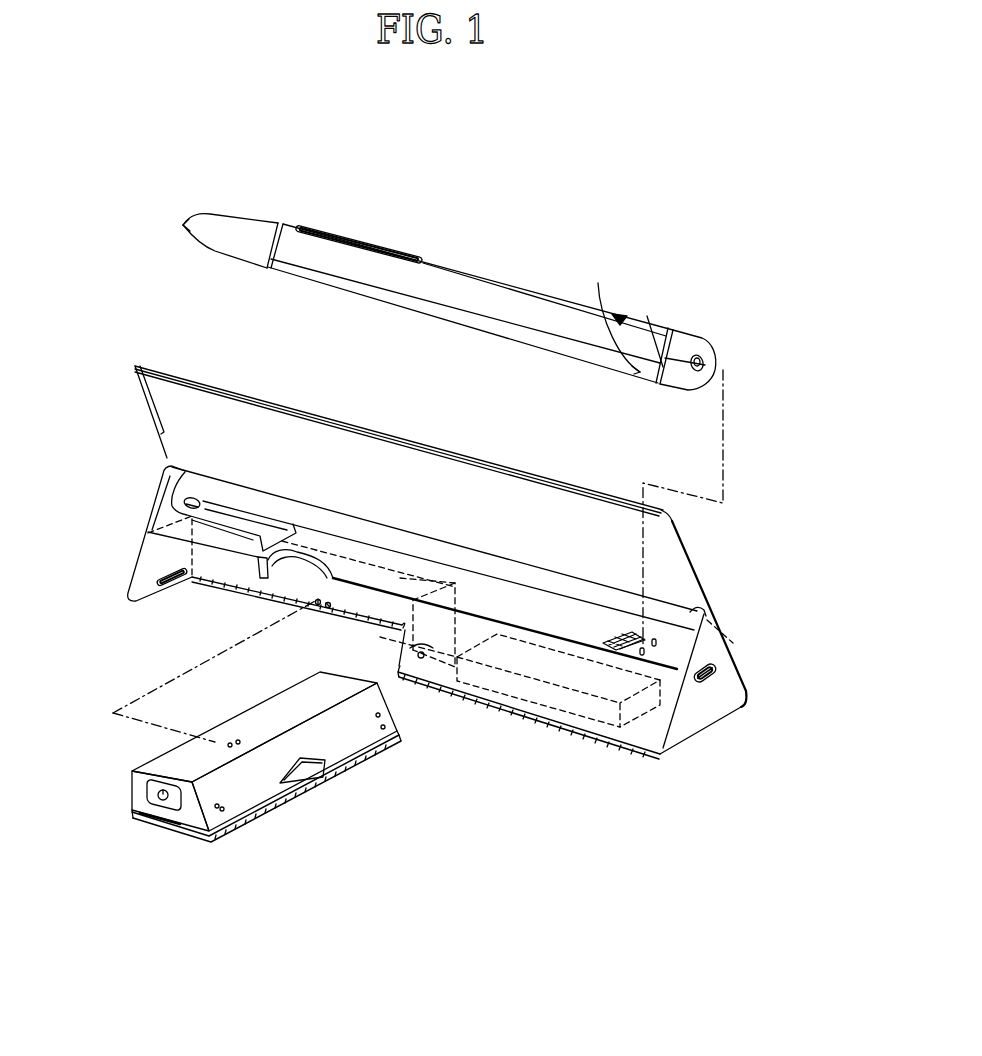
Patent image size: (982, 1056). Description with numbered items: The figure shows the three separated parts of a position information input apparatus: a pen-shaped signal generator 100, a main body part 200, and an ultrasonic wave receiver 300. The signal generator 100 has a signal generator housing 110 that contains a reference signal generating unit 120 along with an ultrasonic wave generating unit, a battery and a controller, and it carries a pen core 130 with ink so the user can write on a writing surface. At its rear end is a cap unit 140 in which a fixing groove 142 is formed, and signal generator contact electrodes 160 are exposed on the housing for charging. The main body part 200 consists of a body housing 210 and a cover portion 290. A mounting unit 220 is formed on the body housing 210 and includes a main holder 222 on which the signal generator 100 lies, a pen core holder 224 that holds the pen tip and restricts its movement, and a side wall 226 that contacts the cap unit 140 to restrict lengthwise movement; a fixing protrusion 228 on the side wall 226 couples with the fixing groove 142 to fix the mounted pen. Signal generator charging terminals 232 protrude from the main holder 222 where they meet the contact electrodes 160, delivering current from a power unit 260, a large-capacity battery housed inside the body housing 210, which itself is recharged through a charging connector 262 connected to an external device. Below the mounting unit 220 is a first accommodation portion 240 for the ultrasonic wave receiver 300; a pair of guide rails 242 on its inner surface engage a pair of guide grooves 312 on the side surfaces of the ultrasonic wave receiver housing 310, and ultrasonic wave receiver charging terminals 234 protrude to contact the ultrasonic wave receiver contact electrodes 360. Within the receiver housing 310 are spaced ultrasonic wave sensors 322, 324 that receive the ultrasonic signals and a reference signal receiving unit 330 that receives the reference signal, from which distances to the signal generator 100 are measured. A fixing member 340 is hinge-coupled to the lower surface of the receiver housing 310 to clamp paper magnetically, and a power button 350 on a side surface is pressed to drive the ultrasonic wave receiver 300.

The signal generator 100 is at (478, 265).
The signal generator housing 110 is at (464, 271).
The reference signal generating unit 120 is at (661, 326).
The pen core 130 is at (185, 222).
The cap unit 140 is at (717, 328).
The fixing groove 142 is at (710, 357).
The signal generator contact electrodes 160 is at (648, 338).
The main body part 200 is at (442, 587).
The body housing 210 is at (264, 565).
The mounting unit 220 is at (416, 494).
The main holder 222 is at (483, 592).
The pen core holder 224 is at (248, 518).
The side wall 226 is at (448, 534).
The fixing protrusion 228 is at (710, 640).
The signal generator charging terminals 232 is at (668, 706).
The ultrasonic wave receiver charging terminals 234 is at (320, 608).
The first accommodation portion 240 is at (276, 600).
The guide rails 242 is at (173, 590).
The power unit 260 is at (593, 676).
The charging connector 262 is at (718, 666).
The cover portion 290 is at (708, 586).
The ultrasonic wave receiver 300 is at (240, 796).
The ultrasonic wave receiver housing 310 is at (249, 788).
The guide grooves 312 is at (162, 826).
The ultrasonic wave sensor 322 is at (220, 815).
The ultrasonic wave sensor 324 is at (387, 733).
The reference signal receiving unit 330 is at (266, 822).
The fixing member 340 is at (307, 768).
The power button 350 is at (147, 789).
The ultrasonic wave receiver contact electrodes 360 is at (232, 745).